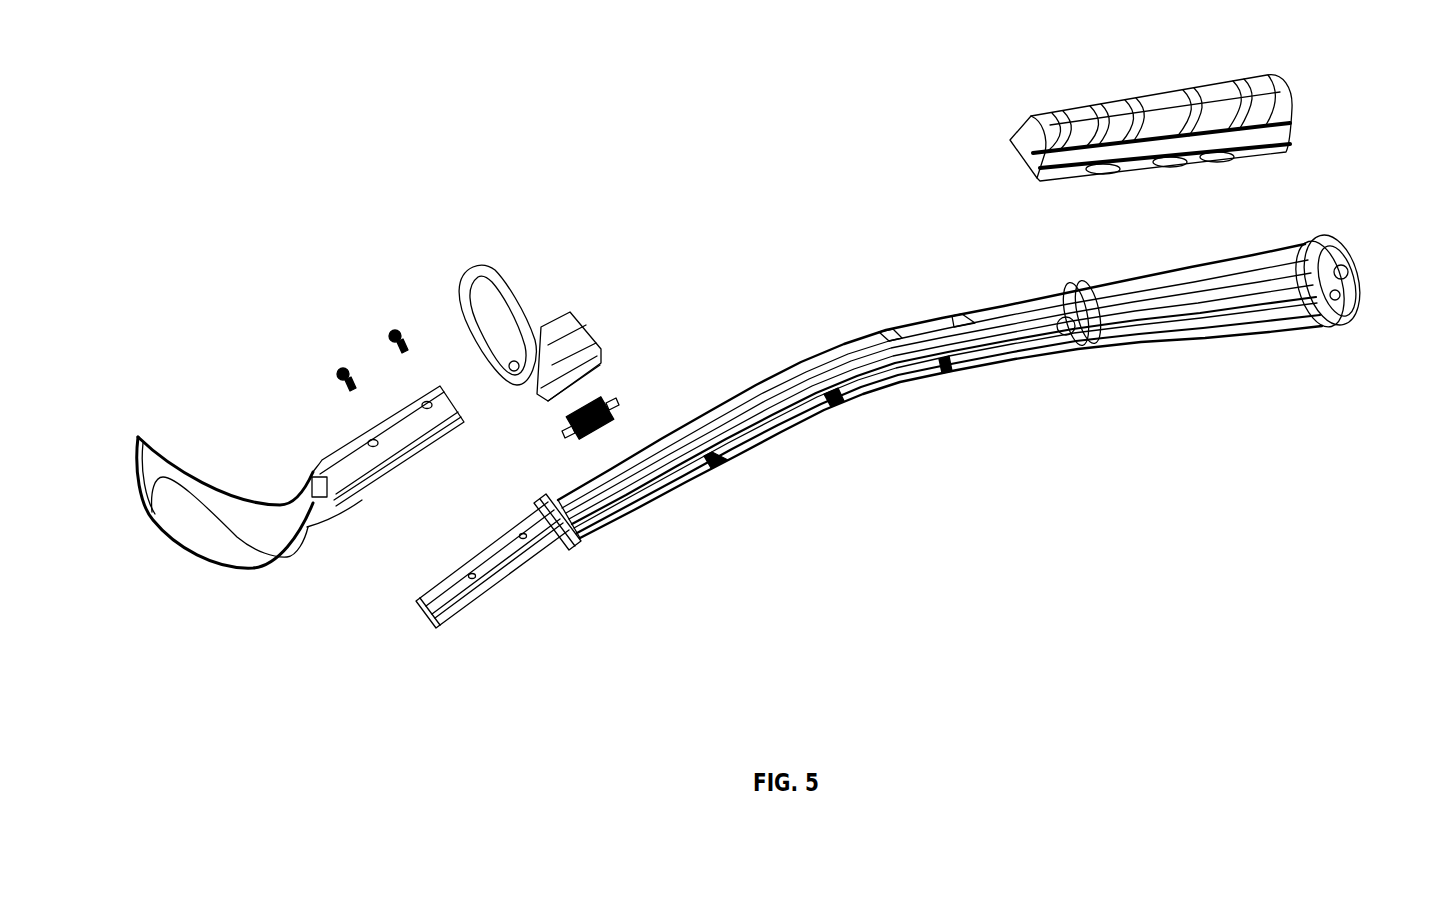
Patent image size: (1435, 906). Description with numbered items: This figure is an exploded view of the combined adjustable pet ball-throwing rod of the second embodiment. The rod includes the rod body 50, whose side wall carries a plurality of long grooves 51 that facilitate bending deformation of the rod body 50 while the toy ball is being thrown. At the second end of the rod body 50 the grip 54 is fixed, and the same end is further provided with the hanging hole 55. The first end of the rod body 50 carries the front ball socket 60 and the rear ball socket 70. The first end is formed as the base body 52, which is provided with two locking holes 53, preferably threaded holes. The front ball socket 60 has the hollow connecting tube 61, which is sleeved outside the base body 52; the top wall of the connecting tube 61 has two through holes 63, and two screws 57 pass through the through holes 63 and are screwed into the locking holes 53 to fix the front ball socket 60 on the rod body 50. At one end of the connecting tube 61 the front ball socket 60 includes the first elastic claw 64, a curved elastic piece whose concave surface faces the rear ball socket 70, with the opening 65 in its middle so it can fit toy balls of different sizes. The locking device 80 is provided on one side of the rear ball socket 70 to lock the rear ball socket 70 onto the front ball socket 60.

The rod body 50 is at (953, 325).
The long grooves 51 is at (860, 390).
The base body 52 is at (507, 573).
The locking holes 53 is at (540, 526).
The grip 54 is at (1175, 108).
The hanging hole 55 is at (1360, 283).
The screws 57 is at (393, 333).
The front ball socket 60 is at (279, 472).
The hollow connecting tube 61 is at (405, 418).
The through holes 63 is at (427, 398).
The first elastic claw 64 is at (210, 537).
The opening 65 is at (137, 467).
The rear ball socket 70 is at (562, 333).
The locking device 80 is at (613, 410).